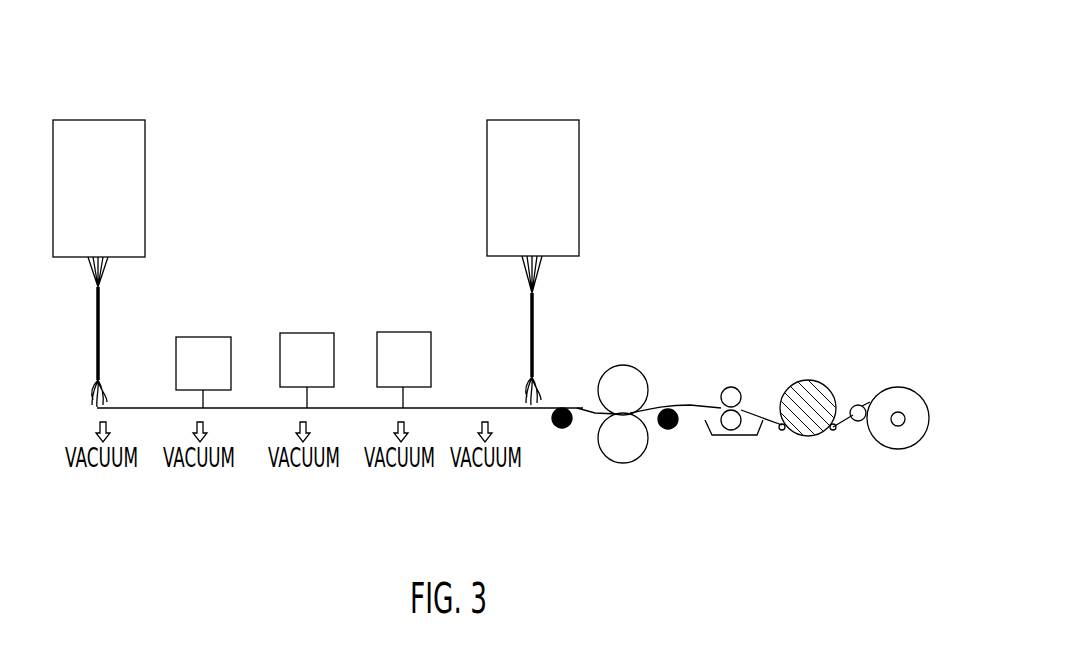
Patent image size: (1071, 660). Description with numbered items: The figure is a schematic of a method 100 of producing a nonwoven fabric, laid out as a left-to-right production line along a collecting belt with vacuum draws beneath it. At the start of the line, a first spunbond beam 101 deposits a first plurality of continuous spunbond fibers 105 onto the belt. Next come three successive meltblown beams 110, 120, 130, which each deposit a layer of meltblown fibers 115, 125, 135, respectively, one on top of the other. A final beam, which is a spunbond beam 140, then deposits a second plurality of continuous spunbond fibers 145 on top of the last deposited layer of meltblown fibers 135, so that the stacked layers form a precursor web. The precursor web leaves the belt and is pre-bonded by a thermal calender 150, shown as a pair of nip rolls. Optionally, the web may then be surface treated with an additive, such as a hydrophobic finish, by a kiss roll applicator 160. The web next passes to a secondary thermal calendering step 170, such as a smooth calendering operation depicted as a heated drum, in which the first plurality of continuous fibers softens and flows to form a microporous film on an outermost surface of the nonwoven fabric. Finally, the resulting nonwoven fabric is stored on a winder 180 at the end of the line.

The method of producing a nonwoven fabric 100 is at (698, 122).
The first spunbond beam 101 is at (91, 125).
The first plurality of continuous spunbond fibers 105 is at (97, 336).
The meltblown beam 110 is at (204, 342).
The layer of meltblown fibers 115 is at (208, 397).
The meltblown beam 120 is at (297, 343).
The layer of meltblown fibers 125 is at (312, 396).
The meltblown beam 130 is at (404, 343).
The layer of meltblown fibers 135 is at (408, 396).
The spunbond beam 140 is at (543, 125).
The second plurality of continuous spunbond fibers 145 is at (534, 333).
The thermal calender 150 is at (605, 456).
The kiss roll applicator 160 is at (733, 387).
The secondary thermal calendering step 170 is at (810, 380).
The winder 180 is at (873, 440).